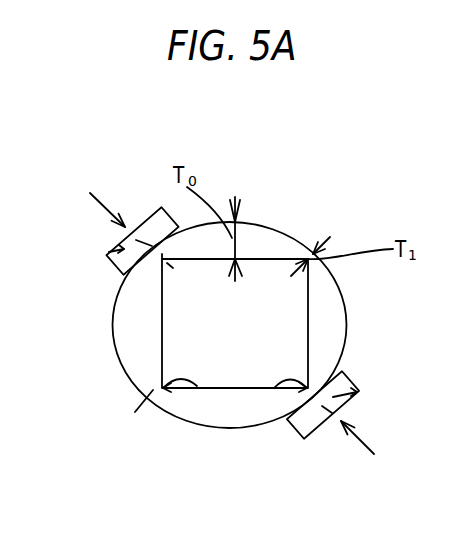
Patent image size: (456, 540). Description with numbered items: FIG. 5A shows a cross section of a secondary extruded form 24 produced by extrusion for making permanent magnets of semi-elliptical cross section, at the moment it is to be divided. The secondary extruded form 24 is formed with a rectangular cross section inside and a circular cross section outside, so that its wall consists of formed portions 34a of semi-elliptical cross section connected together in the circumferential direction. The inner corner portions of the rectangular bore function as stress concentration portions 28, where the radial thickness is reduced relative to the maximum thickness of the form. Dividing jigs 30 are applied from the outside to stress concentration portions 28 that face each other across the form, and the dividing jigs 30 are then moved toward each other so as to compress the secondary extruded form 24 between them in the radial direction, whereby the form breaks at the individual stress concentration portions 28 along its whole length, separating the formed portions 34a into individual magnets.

The secondary extruded form 24 is at (273, 227).
The stress concentration portion 28 is at (162, 256).
The dividing jig 30 is at (110, 250).
The formed portion 34a is at (133, 321).